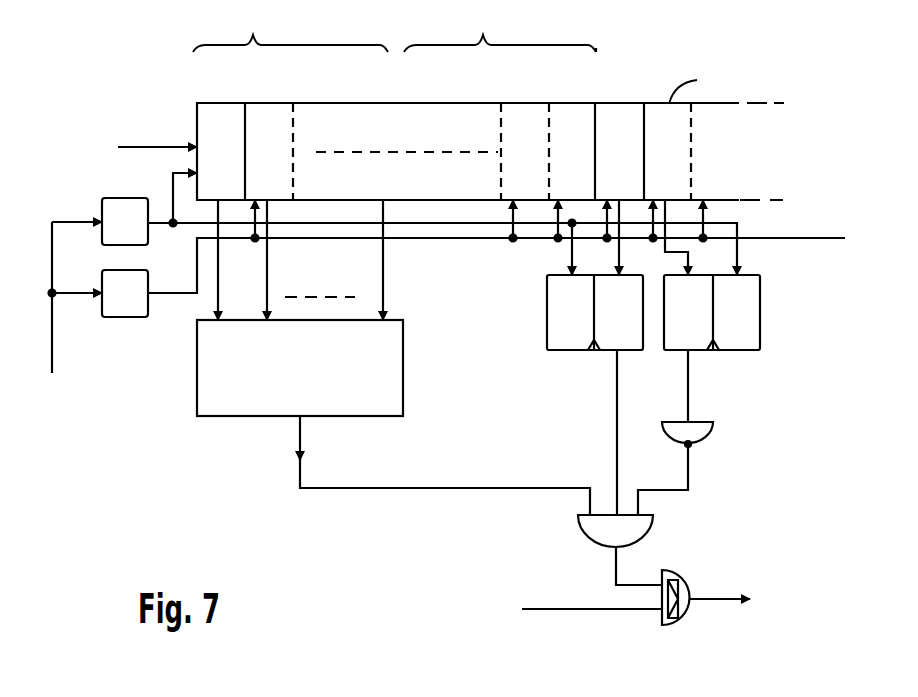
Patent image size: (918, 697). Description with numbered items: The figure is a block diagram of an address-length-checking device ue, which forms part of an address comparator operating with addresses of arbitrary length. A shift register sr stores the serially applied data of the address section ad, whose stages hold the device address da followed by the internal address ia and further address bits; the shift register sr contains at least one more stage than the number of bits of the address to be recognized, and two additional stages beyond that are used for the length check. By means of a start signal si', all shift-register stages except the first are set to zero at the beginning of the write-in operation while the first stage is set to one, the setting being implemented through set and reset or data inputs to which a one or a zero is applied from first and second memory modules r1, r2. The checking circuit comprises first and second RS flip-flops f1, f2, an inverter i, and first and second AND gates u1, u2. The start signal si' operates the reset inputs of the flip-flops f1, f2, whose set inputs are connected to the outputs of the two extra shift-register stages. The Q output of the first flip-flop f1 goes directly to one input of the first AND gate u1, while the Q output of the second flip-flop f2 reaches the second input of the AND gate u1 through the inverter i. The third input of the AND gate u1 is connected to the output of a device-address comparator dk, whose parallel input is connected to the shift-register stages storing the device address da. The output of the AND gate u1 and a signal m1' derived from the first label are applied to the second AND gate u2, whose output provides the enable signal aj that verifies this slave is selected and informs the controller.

The shift register sr is at (408, 103).
The device address section da is at (290, 26).
The internal address section ia is at (500, 26).
The address section ad is at (138, 147).
The first memory module r1 is at (100, 205).
The second memory module r2 is at (115, 317).
The start signal si' is at (54, 319).
The device-address comparator dk is at (192, 407).
The first RS flip-flop f1 is at (547, 318).
The second RS flip-flop f2 is at (760, 310).
The address-length-checking device ue is at (513, 398).
The inverter i is at (713, 427).
The first AND gate u1 is at (653, 525).
The second AND gate u2 is at (678, 625).
The enable signal aj is at (737, 603).
The signal derived from the first label m1' is at (566, 607).